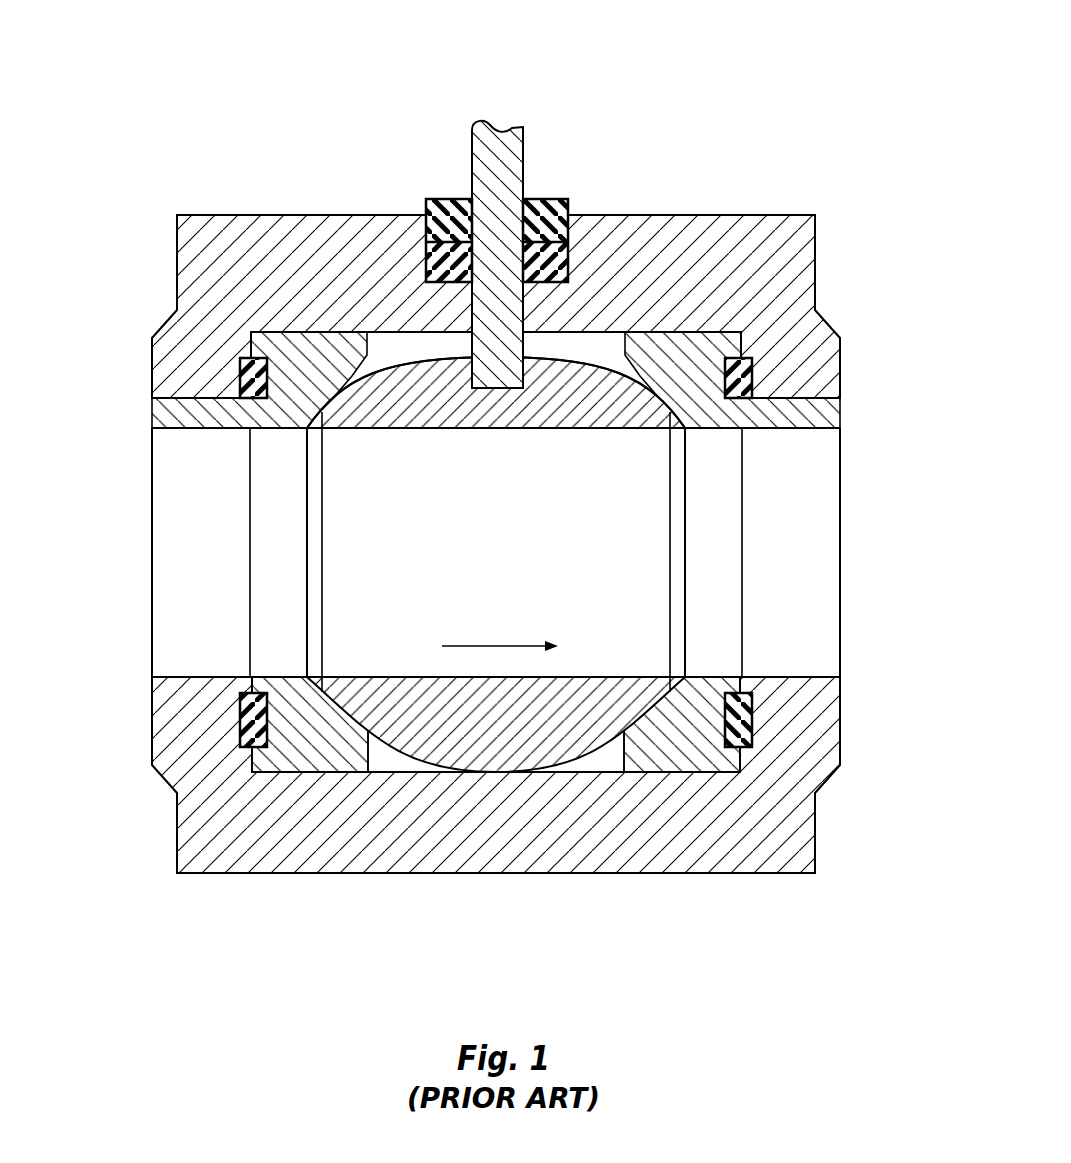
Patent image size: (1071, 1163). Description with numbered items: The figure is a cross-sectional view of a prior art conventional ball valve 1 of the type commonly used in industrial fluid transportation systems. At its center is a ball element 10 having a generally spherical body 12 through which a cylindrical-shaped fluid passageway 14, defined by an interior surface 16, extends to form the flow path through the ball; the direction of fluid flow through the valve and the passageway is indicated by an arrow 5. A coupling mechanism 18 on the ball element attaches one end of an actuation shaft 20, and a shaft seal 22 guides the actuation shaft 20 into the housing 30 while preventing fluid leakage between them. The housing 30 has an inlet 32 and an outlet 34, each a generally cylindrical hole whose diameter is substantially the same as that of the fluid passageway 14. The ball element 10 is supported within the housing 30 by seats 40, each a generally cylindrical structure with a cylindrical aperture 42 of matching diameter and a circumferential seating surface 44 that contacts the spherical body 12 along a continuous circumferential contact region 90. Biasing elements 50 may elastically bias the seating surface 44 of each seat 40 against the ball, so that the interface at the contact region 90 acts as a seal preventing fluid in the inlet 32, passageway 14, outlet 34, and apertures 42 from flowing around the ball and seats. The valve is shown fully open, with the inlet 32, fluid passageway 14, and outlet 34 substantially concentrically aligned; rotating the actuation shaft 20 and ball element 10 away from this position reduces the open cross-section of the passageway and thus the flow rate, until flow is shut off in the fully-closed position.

The conventional ball valve 1 is at (717, 98).
The arrow 5 is at (493, 646).
The ball element 10 is at (392, 750).
The spherical body 12 is at (512, 723).
The fluid passageway 14 is at (514, 557).
The interior surface 16 is at (395, 428).
The coupling mechanism 18 is at (470, 358).
The actuation shaft 20 is at (525, 150).
The shaft seal 22 is at (556, 197).
The housing 30 is at (652, 820).
The inlet 32 is at (212, 557).
The outlet 34 is at (807, 557).
The seat 40 is at (683, 363).
The cylindrical aperture 42 is at (294, 557).
The circumferential seating surface 44 is at (322, 433).
The biasing element 50 is at (740, 373).
The circumferential contact region 90 is at (322, 428).